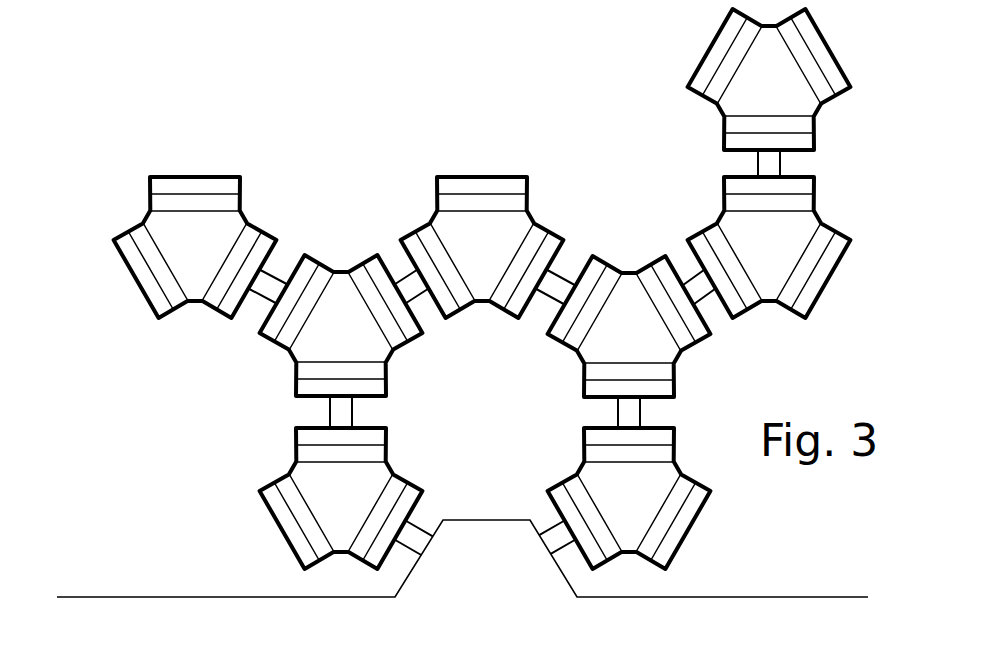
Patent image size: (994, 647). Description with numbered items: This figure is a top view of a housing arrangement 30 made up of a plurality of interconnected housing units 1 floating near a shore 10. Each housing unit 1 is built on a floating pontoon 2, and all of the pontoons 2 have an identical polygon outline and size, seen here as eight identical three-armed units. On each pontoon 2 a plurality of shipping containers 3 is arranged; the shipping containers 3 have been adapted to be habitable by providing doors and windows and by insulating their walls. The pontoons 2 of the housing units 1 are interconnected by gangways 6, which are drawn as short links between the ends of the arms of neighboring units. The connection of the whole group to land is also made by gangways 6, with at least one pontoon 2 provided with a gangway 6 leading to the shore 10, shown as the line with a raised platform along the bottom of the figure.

The housing unit 1 is at (128, 196).
The floating pontoon 2 is at (637, 508).
The shipping container 3 is at (214, 186).
The gangway 6 is at (776, 165).
The shore 10 is at (470, 640).
The housing arrangement 30 is at (372, 115).